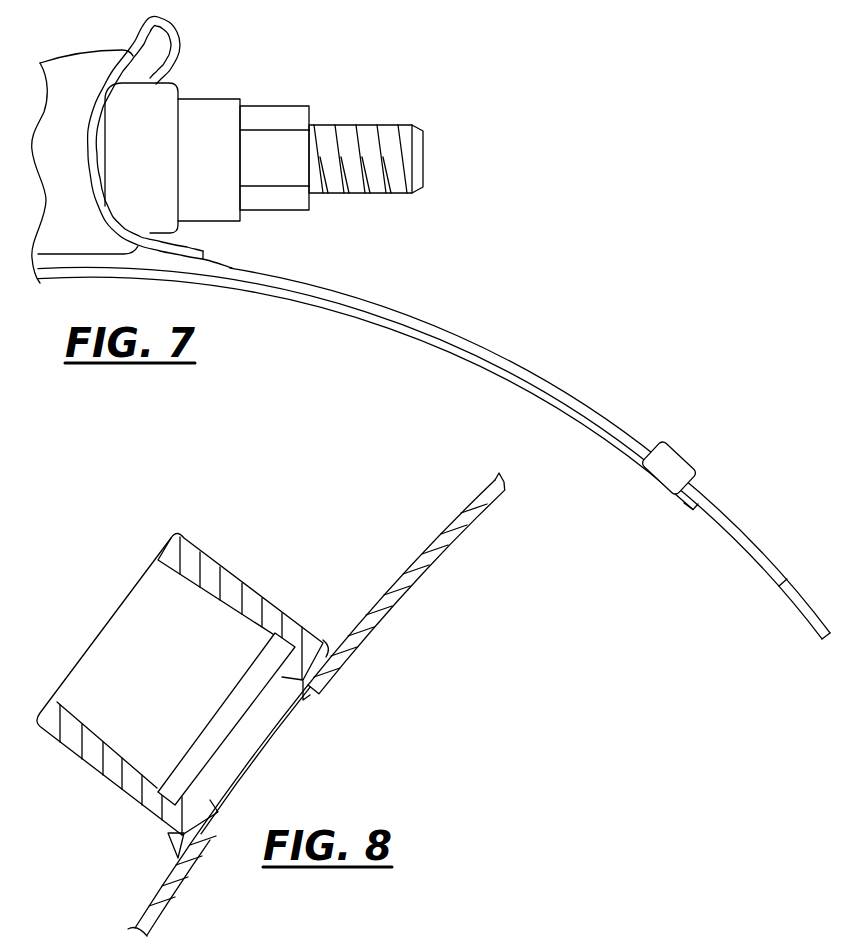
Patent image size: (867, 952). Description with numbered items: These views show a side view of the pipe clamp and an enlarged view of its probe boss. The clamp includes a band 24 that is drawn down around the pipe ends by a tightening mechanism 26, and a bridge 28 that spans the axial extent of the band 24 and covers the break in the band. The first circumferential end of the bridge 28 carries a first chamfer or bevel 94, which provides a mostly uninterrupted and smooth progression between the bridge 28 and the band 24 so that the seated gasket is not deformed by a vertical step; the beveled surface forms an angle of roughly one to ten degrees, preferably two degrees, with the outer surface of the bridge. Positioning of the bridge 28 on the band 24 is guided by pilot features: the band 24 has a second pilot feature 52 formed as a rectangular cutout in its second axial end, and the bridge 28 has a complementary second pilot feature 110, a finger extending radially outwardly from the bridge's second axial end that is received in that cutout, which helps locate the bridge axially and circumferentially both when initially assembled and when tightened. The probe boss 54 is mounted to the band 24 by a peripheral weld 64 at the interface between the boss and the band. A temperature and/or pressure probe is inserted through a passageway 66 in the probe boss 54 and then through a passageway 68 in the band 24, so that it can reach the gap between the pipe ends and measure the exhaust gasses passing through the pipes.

In FIG. 7, the band 24 is at (438, 310).
In FIG. 8, the band 24 is at (377, 579).
In FIG. 7, the tightening mechanism 26 is at (265, 90).
In FIG. 7, the bridge 28 is at (318, 324).
In FIG. 7, the second pilot feature 52 is at (746, 544).
In FIG. 8, the probe boss 54 is at (192, 556).
In FIG. 8, the peripheral weld 64 is at (332, 640).
In FIG. 8, the passageway 66 is at (95, 727).
In FIG. 8, the passageway 68 is at (306, 700).
In FIG. 7, the first chamfer or bevel 94 is at (690, 508).
In FIG. 7, the second pilot feature 110 is at (672, 465).